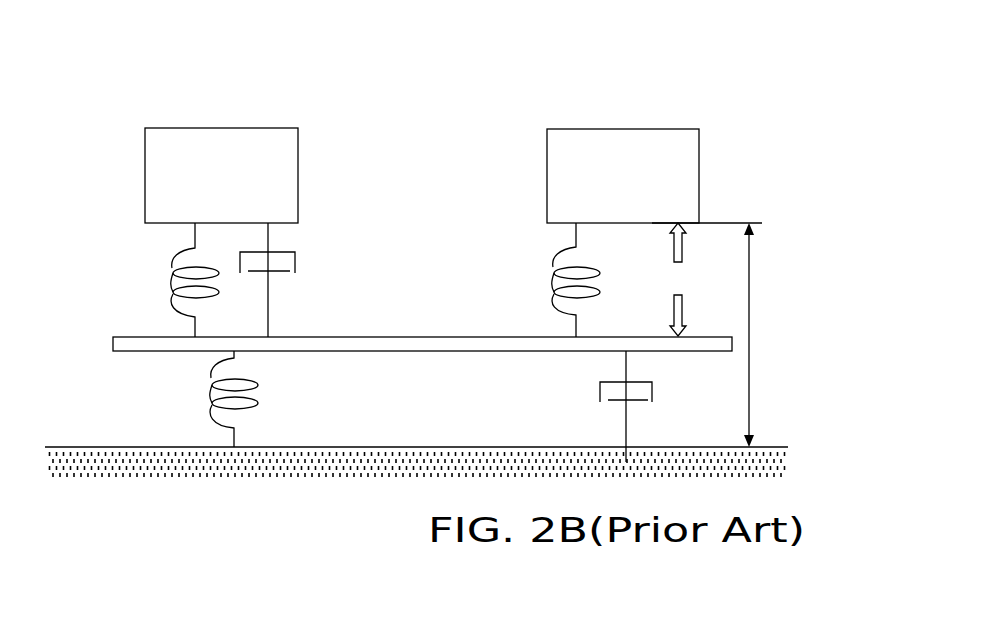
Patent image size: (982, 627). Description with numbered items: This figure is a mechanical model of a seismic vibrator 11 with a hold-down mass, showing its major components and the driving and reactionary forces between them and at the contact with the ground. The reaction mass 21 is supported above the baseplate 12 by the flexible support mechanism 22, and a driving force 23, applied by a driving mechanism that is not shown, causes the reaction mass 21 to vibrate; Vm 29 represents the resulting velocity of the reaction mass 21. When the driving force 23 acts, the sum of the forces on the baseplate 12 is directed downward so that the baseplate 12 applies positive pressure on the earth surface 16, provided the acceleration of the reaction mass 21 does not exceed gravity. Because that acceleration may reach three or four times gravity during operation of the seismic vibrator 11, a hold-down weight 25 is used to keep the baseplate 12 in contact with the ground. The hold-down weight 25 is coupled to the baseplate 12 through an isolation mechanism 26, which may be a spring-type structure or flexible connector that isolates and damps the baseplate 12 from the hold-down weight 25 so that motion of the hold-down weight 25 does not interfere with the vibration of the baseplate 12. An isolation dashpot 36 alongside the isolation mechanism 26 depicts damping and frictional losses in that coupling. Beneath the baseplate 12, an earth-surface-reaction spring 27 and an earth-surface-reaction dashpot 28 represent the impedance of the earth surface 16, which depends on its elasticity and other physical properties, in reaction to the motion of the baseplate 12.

The seismic vibrator 11 is at (466, 108).
The baseplate 12 is at (147, 352).
The earth surface 16 is at (470, 447).
The reaction mass 21 is at (547, 165).
The flexible support mechanism 22 is at (554, 291).
The driving force 23 is at (682, 248).
The hold-down weight 25 is at (298, 186).
The isolation mechanism 26 is at (172, 310).
The earth-surface-reaction spring 27 is at (258, 404).
The earth-surface-reaction dashpot 28 is at (652, 398).
The velocity of the reaction mass (Vm) 29 is at (751, 370).
The isolation dashpot 36 is at (296, 259).